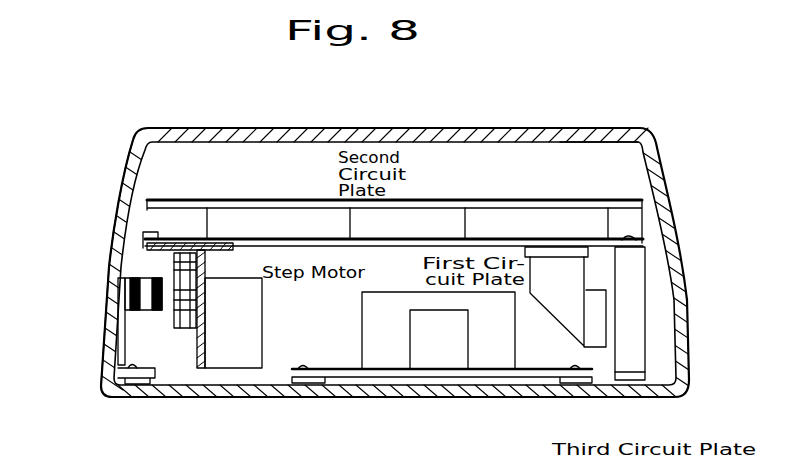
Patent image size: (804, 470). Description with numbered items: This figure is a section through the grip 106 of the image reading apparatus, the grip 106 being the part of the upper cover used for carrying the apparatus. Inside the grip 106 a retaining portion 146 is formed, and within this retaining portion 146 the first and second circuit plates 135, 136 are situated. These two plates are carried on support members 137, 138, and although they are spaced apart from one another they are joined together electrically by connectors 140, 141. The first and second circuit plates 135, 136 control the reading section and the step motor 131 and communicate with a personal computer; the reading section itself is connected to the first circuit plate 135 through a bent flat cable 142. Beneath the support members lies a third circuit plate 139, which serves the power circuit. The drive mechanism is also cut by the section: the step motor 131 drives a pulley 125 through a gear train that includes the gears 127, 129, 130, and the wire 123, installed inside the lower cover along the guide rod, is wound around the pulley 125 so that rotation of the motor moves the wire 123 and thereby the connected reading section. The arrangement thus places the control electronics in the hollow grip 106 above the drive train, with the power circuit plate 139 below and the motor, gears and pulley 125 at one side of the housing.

The grip 106 is at (452, 128).
The wire 123 is at (124, 258).
The pulley 125 is at (127, 282).
The gear 127 is at (140, 347).
The gear 129 is at (237, 243).
The gear 130 is at (190, 327).
The step motor 131 is at (243, 318).
The first circuit plate 135 is at (392, 242).
The second circuit plate 136 is at (408, 207).
The support member 137 is at (633, 290).
The support member 138 is at (121, 205).
The third circuit plate 139 is at (523, 372).
The connector 140 is at (293, 220).
The connector 141 is at (547, 217).
The bent flat cable 142 is at (560, 292).
The retaining portion 146 is at (600, 163).